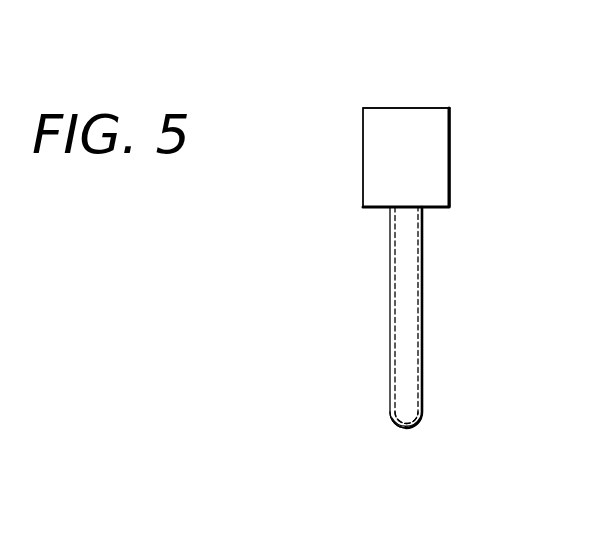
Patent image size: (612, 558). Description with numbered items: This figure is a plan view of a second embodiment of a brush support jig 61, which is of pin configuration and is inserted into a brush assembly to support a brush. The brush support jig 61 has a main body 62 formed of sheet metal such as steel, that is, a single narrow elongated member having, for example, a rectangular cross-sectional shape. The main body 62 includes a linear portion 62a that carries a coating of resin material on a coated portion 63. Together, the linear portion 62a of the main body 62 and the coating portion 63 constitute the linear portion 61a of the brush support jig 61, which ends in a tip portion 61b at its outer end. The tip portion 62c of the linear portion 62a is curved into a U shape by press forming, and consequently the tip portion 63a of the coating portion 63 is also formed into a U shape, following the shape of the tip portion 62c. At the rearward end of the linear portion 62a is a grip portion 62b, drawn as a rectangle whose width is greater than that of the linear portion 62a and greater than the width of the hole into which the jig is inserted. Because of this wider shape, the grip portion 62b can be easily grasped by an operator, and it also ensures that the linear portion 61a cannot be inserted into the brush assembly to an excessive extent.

The brush support jig 61 is at (408, 244).
The linear portion 61a is at (425, 347).
The tip portion 61b is at (422, 435).
The main body 62 is at (443, 188).
The linear portion 62a is at (368, 315).
The grip portion 62b is at (383, 163).
The tip portion 62c is at (410, 420).
The coating portion 63 is at (390, 310).
The tip portion 63a is at (400, 428).